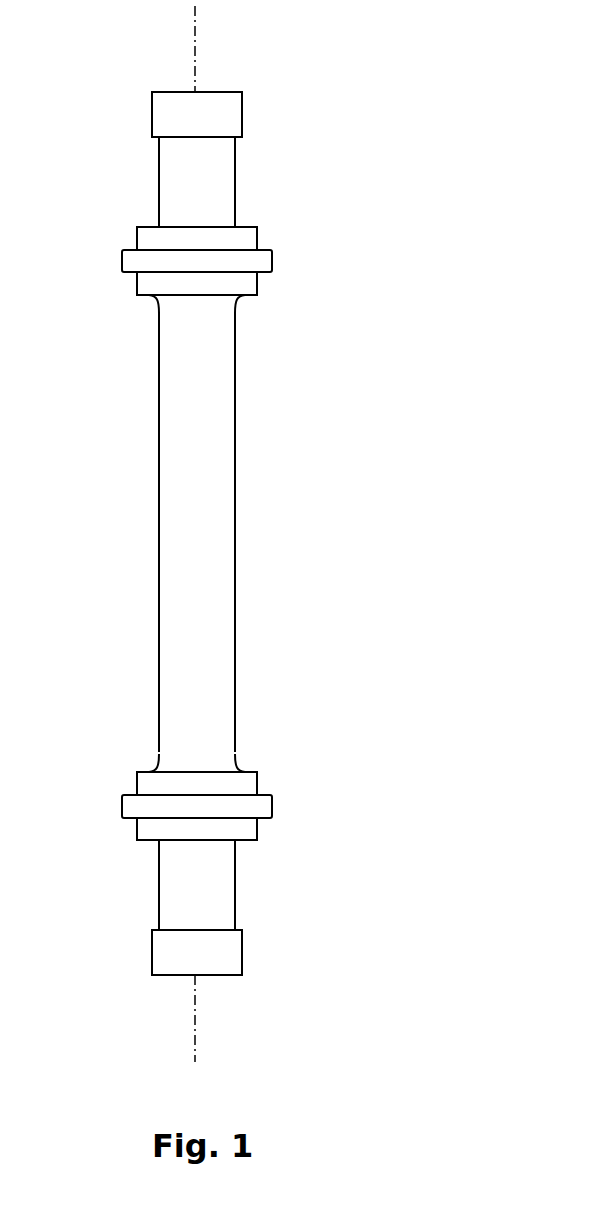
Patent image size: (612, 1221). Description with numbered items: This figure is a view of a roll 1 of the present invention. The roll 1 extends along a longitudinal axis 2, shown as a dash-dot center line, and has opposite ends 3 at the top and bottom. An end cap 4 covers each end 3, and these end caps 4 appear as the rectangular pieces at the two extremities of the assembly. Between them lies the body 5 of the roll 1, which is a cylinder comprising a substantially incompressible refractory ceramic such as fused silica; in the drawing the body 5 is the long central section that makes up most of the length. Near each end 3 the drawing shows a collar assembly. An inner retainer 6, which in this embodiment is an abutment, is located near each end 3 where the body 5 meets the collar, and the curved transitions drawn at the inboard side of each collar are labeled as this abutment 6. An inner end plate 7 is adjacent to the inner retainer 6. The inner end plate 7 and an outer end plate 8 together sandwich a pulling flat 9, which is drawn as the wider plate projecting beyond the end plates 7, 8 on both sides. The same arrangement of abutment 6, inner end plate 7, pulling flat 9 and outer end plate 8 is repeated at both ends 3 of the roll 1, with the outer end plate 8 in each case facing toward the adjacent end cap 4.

The roll 1 is at (400, 596).
The longitudinal axis 2 is at (198, 1038).
The end 3 is at (170, 91).
The end cap 4 is at (242, 114).
The body 5 is at (123, 483).
The inner retainer 6 is at (150, 298).
The inner end plate 7 is at (257, 285).
The outer end plate 8 is at (257, 237).
The pulling flat 9 is at (122, 258).